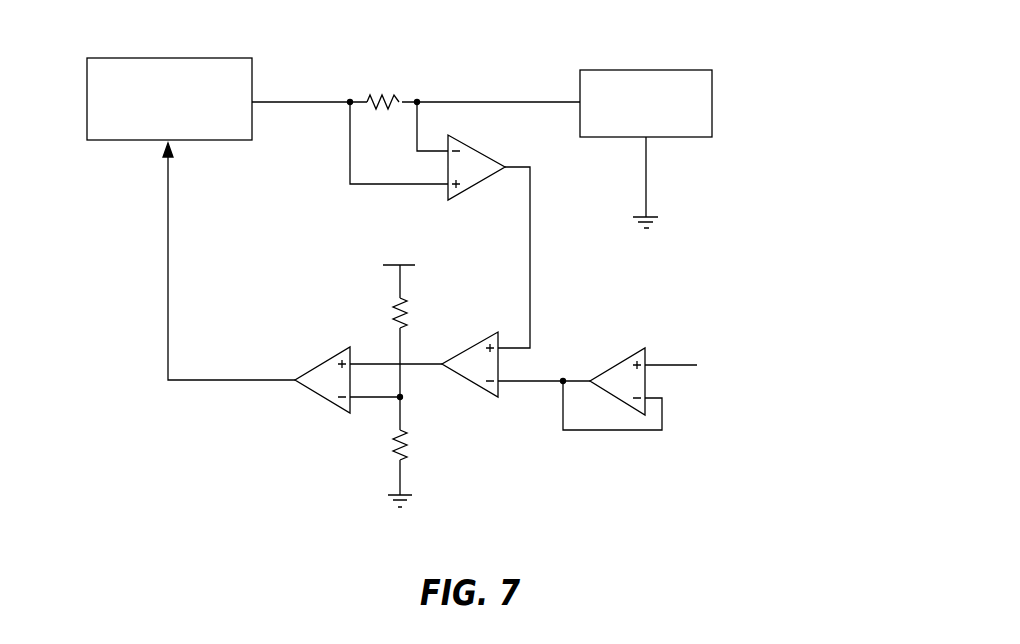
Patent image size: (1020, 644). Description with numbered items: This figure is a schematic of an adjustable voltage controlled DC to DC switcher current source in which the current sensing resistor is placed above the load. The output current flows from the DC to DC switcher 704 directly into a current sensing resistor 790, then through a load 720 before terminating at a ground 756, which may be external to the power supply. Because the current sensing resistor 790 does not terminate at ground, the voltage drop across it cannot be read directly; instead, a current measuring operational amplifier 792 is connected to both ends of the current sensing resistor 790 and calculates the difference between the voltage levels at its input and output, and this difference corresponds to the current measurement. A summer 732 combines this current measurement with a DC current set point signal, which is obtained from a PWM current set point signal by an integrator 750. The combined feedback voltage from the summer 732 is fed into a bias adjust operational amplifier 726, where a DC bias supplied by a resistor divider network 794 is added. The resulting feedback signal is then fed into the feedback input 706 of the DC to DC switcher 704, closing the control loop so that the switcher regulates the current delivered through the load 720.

The DC to DC switcher 704 is at (115, 141).
The feedback input 706 is at (173, 142).
The current sensing resistor 790 is at (378, 93).
The current measuring operational amplifier 792 is at (477, 187).
The load 720 is at (660, 69).
The ground 756 is at (655, 217).
The resistor divider network 794 is at (360, 488).
The bias adjust operational amplifier 726 is at (317, 395).
The summer 732 is at (468, 382).
The integrator 750 is at (612, 367).